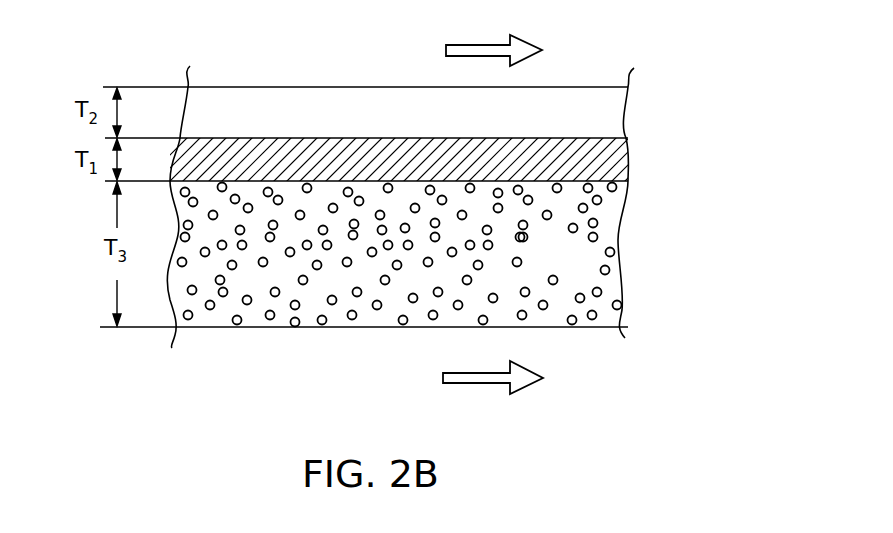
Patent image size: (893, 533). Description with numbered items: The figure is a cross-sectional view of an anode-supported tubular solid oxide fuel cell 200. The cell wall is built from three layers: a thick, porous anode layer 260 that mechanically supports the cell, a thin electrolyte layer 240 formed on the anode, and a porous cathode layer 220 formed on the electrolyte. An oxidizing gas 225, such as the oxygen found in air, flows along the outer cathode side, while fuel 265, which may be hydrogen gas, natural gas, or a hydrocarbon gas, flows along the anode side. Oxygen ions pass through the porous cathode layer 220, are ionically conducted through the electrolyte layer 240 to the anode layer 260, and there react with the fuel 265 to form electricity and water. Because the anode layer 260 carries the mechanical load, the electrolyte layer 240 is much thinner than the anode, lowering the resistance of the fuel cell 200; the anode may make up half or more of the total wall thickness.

The tubular solid oxide fuel cell 200 is at (233, 73).
The cathode layer 220 is at (578, 131).
The oxidizing gas 225 is at (416, 32).
The electrolyte layer 240 is at (578, 171).
The anode layer 260 is at (584, 266).
The fuel 265 is at (384, 416).